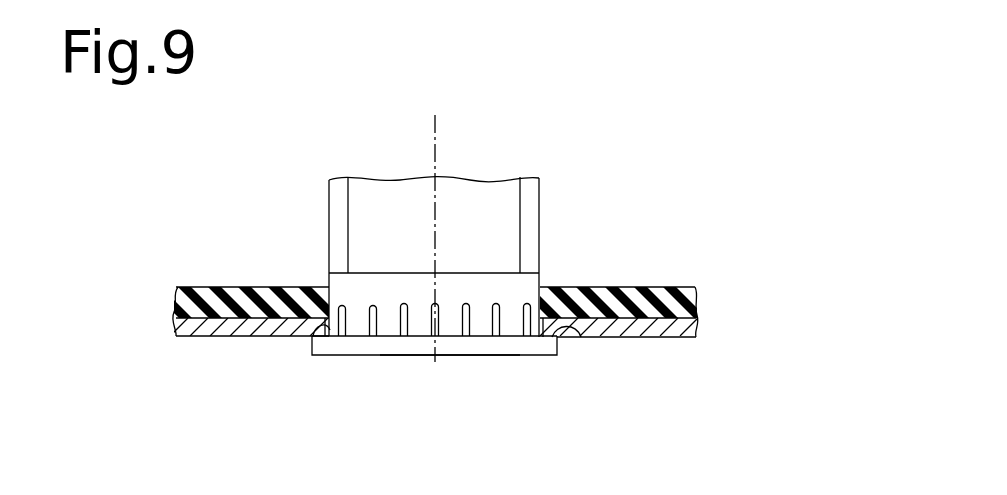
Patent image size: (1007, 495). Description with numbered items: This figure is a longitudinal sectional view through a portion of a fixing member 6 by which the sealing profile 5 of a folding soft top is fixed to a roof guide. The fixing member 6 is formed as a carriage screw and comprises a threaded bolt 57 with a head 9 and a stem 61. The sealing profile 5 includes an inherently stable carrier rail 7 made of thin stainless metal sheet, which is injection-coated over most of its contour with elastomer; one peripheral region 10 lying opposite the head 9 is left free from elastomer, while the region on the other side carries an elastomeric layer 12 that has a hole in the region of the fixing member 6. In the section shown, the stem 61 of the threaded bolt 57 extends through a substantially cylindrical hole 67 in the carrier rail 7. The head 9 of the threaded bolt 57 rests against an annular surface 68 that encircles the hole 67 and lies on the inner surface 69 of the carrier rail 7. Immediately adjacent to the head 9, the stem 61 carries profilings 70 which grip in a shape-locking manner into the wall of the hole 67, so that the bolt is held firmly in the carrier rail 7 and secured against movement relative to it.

The threaded bolt 57 is at (543, 175).
The stem 61 is at (541, 284).
The elastomeric layer 12 is at (691, 288).
The profilings 70 is at (372, 307).
The sealing profile 5 is at (189, 340).
The inner surface 69 is at (255, 337).
The hole 67 is at (340, 336).
The fixing member 6 is at (399, 358).
The head 9 is at (487, 356).
The annular surface 68 is at (558, 329).
The peripheral region 10 is at (637, 338).
The carrier rail 7 is at (693, 338).